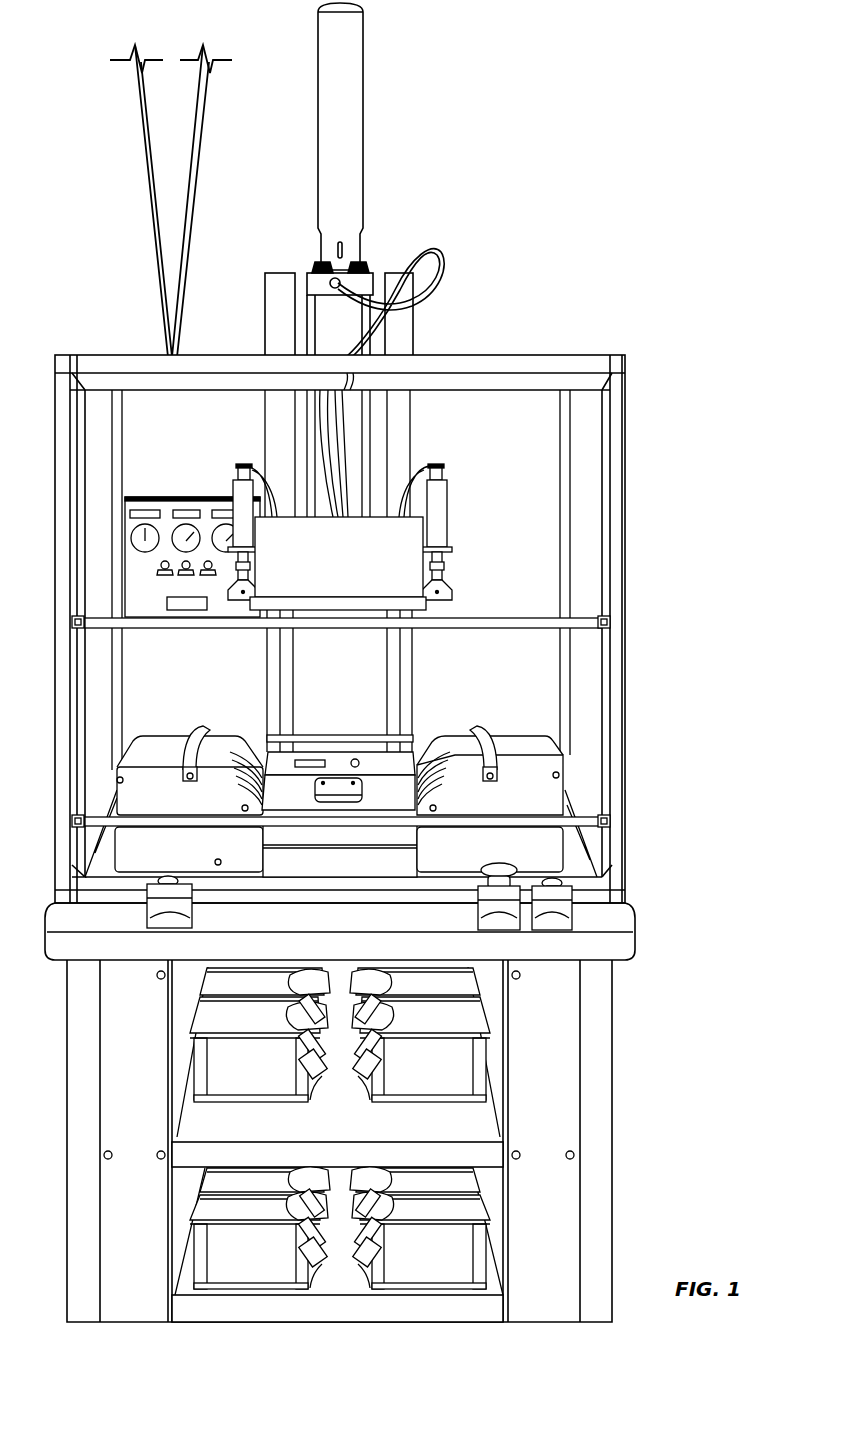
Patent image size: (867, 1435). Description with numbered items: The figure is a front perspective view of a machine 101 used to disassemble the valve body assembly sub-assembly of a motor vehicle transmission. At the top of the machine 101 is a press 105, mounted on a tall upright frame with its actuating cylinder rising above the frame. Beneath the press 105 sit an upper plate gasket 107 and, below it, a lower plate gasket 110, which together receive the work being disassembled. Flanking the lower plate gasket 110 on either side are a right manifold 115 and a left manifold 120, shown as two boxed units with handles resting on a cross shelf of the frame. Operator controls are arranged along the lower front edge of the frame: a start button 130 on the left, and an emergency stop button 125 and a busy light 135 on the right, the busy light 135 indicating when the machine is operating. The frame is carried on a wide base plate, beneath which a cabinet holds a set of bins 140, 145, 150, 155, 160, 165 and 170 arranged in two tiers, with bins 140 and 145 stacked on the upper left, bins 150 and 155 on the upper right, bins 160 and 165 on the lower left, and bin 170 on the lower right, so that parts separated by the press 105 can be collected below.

The machine 101 is at (600, 230).
The press 105 is at (402, 560).
The upper plate gasket 107 is at (402, 606).
The lower plate gasket 110 is at (303, 785).
The right manifold 115 is at (502, 748).
The left manifold 120 is at (152, 745).
The emergency stop button 125 is at (499, 865).
The start button 130 is at (168, 880).
The busy light 135 is at (552, 883).
The bin 140 is at (220, 975).
The bin 145 is at (220, 1012).
The bin 150 is at (460, 975).
The bin 155 is at (460, 1012).
The bin 160 is at (220, 1172).
The bin 165 is at (220, 1207).
The bin 170 is at (460, 1172).